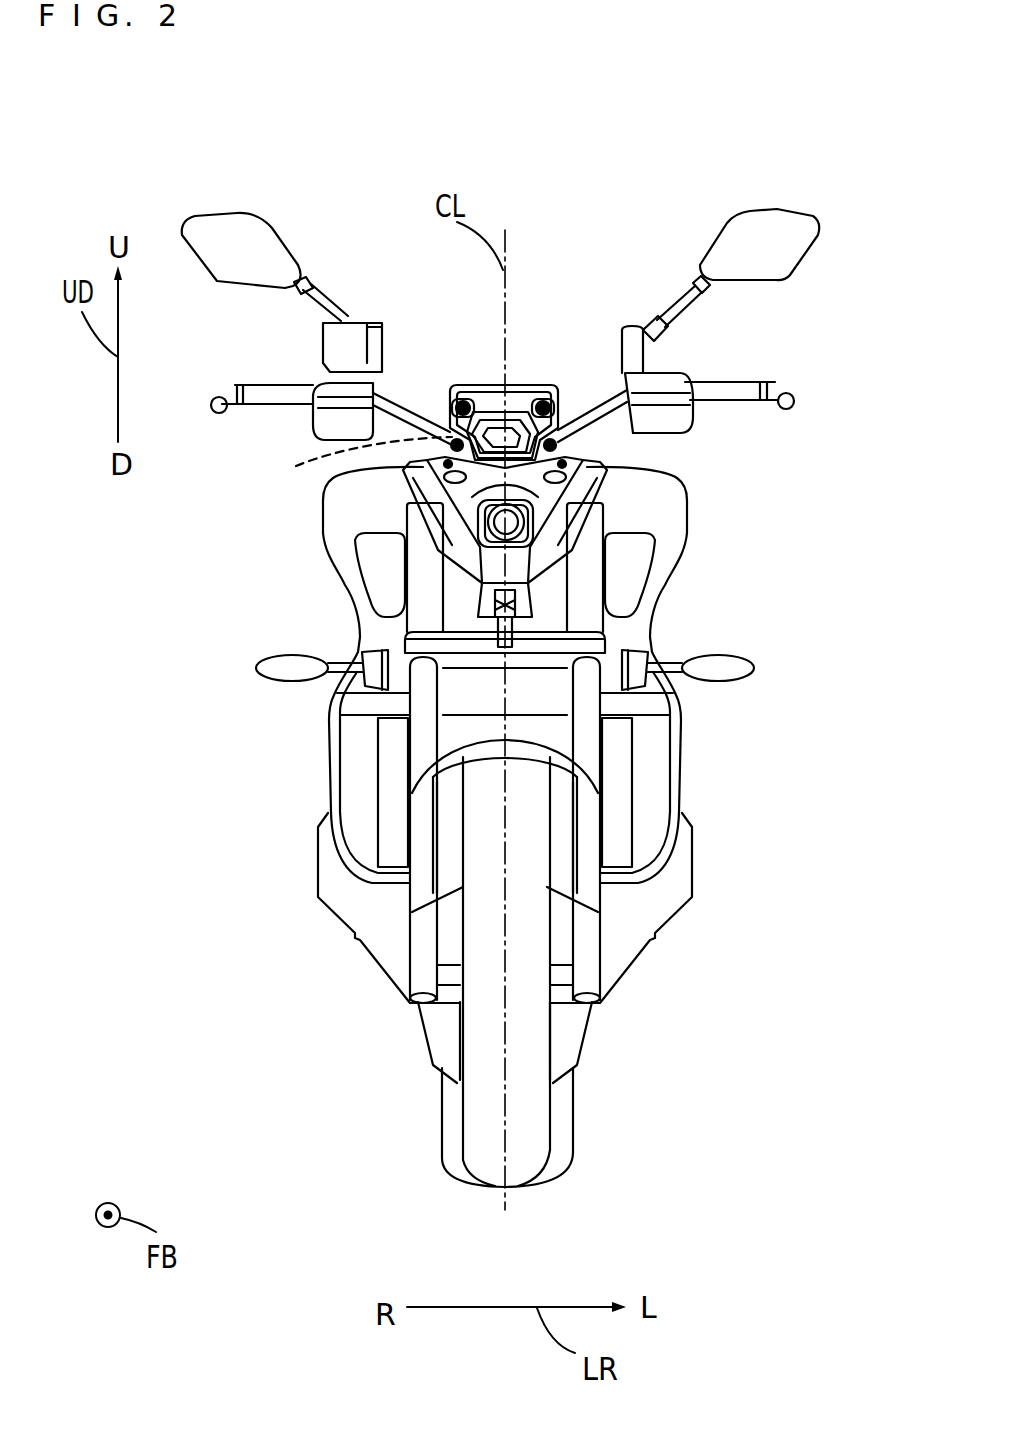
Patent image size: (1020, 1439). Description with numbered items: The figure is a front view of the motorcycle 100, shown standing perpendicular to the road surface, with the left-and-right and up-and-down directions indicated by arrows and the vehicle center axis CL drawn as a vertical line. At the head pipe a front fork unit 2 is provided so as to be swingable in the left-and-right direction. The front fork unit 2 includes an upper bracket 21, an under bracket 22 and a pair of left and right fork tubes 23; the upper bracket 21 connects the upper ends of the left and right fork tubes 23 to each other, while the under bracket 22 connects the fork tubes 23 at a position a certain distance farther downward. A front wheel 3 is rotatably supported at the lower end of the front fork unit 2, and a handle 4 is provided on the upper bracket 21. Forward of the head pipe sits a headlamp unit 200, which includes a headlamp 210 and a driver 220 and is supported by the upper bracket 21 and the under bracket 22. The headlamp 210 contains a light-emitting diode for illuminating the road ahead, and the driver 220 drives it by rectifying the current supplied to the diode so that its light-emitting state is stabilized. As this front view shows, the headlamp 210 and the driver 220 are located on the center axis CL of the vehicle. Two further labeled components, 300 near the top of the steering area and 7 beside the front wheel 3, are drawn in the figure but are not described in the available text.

The motorcycle 100 is at (788, 141).
The handle 4 is at (413, 400).
The headlight unit 300 is at (532, 384).
The driver 220 is at (345, 465).
The headlamp unit 200 is at (422, 576).
The upper bracket 21 is at (605, 494).
The headlamp 210 is at (493, 525).
The under bracket 22 is at (557, 640).
The fork tubes 23 is at (423, 702).
The front fork unit 2 is at (397, 755).
The front fender 7 is at (563, 1102).
The front wheel 3 is at (483, 1115).